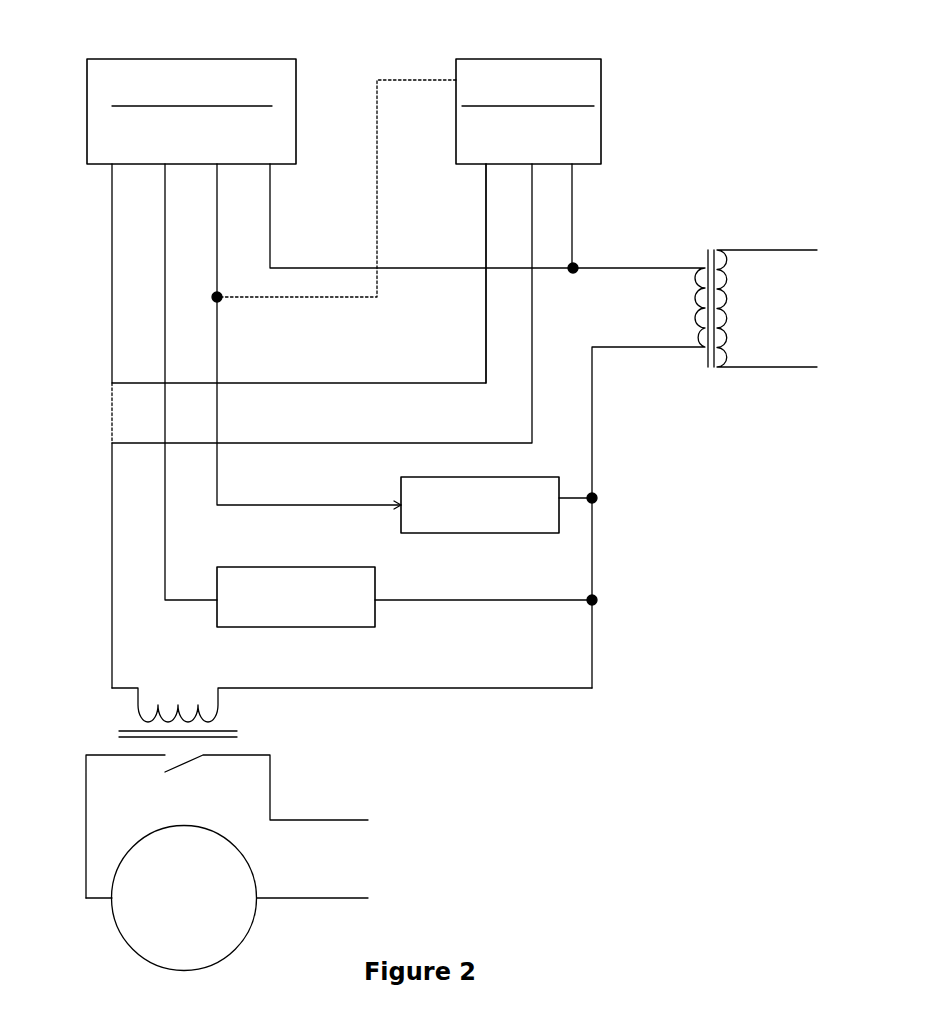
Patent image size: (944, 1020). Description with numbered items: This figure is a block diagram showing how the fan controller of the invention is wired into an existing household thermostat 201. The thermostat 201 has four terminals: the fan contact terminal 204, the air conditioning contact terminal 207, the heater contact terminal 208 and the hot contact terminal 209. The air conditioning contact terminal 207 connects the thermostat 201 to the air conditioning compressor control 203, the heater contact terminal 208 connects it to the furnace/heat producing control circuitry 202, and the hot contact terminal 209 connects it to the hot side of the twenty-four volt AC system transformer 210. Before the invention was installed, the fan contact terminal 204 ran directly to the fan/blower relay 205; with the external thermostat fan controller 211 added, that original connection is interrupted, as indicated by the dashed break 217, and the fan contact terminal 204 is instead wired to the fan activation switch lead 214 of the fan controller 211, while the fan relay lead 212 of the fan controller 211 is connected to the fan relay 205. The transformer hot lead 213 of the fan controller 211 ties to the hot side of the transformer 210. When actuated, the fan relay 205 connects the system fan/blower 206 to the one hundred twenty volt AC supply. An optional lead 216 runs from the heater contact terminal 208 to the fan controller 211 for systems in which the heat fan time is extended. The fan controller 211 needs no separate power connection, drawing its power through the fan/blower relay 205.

The existing household thermostat 201 is at (291, 75).
The external thermostat fan controller 211 is at (597, 75).
The optional lead to thermostat heat terminal 216 is at (440, 78).
The fan contact terminal 204 is at (121, 172).
The air conditioning contact terminal 207 is at (174, 172).
The heater contact terminal 208 is at (227, 172).
The hot contact terminal 209 is at (280, 172).
The thermostat fan activation switch lead 214 is at (493, 178).
The fan relay lead 212 is at (541, 178).
The transformer hot lead 213 is at (581, 178).
The system 24 VAC transformer 210 is at (755, 344).
The furnace/heat producing control circuitry 202 is at (553, 491).
The air conditioning compressor control 203 is at (375, 591).
The break in wiring from thermostat to fan relay 217 is at (117, 408).
The fan/blower relay 205 is at (98, 727).
The system fan/blower 206 is at (140, 937).